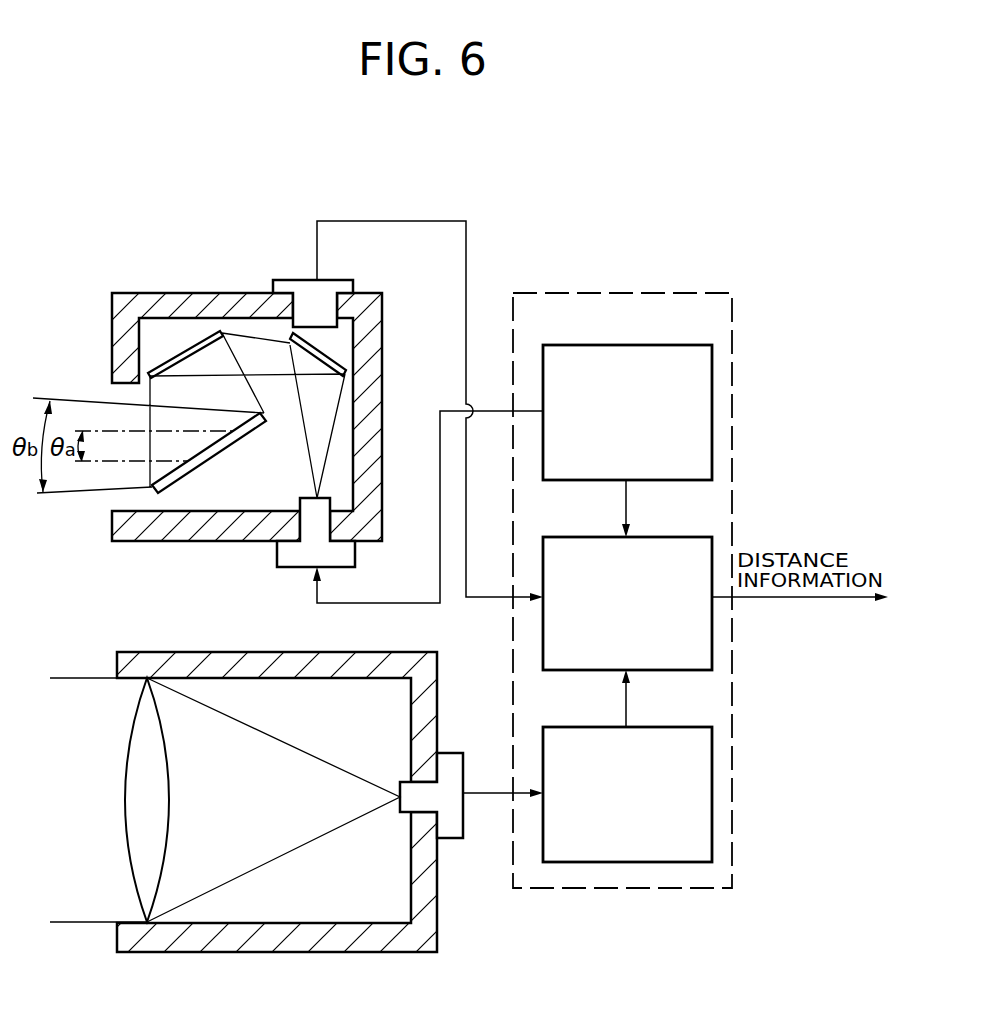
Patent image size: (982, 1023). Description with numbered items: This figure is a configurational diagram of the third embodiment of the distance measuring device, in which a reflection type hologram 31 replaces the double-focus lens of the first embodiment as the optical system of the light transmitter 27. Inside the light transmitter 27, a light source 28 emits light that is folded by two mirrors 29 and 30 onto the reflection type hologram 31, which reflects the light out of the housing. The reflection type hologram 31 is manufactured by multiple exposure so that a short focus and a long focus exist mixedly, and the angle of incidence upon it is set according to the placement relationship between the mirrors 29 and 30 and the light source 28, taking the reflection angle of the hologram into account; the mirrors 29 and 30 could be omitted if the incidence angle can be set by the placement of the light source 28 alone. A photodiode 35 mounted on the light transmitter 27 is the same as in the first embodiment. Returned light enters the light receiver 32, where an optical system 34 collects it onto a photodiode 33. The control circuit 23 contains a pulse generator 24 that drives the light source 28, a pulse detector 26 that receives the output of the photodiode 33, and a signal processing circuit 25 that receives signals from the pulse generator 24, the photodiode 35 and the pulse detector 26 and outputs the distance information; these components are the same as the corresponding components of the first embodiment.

The control circuit 23 is at (588, 293).
The pulse generator 24 is at (655, 345).
The signal processing circuit 25 is at (666, 537).
The pulse detector 26 is at (667, 727).
The light transmitter 27 is at (147, 300).
The light source 28 is at (346, 554).
The mirror 29 is at (345, 345).
The mirror 30 is at (205, 338).
The reflection type hologram 31 is at (240, 443).
The light receiver 32 is at (233, 665).
The photodiode 33 is at (448, 762).
The optical system 34 is at (155, 848).
The photodiode 35 is at (338, 291).